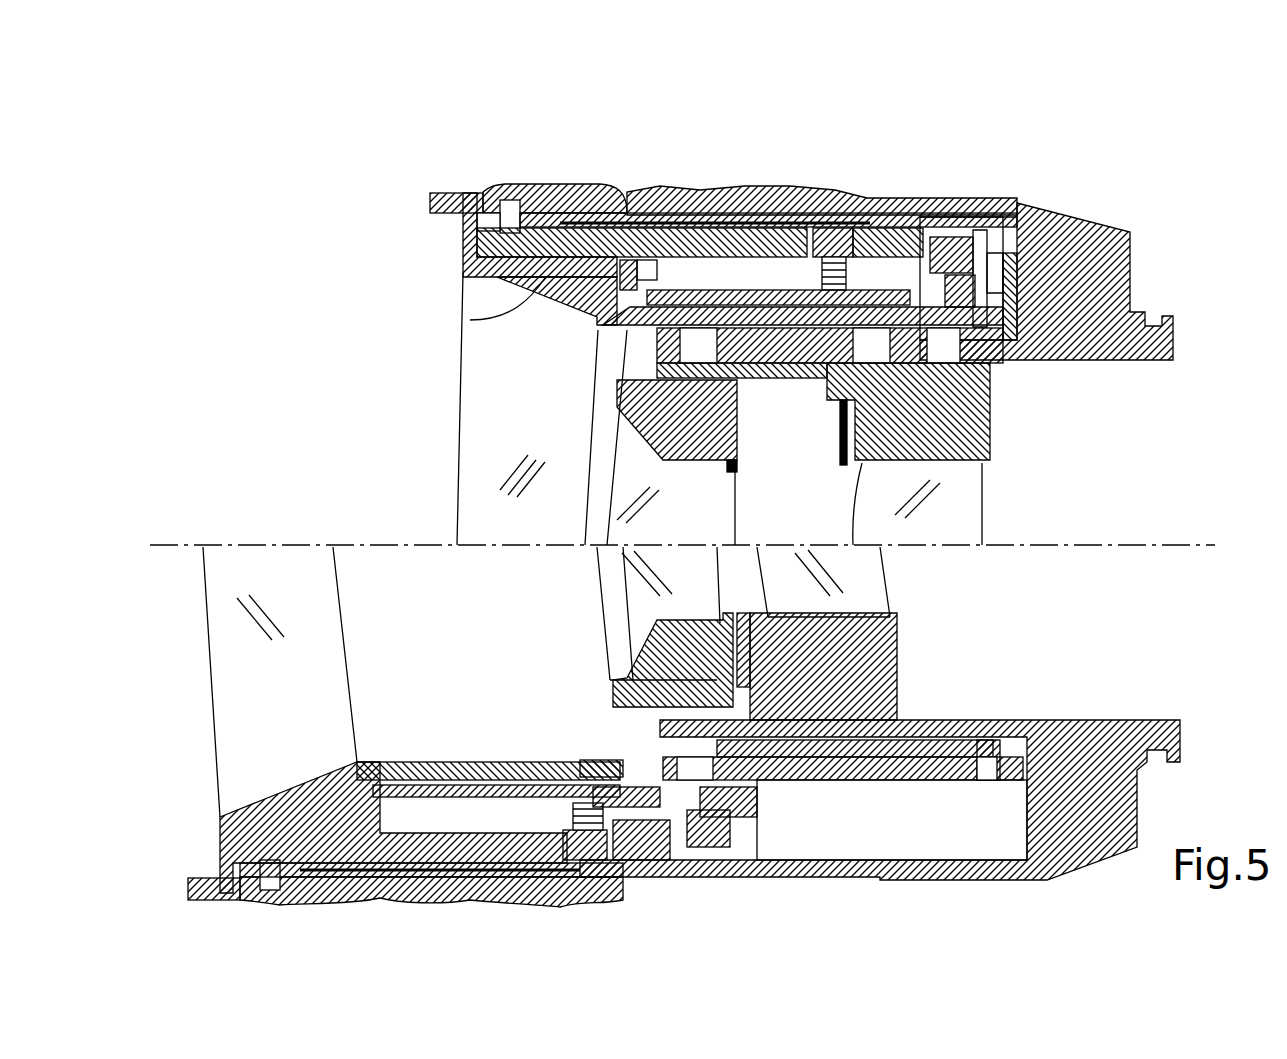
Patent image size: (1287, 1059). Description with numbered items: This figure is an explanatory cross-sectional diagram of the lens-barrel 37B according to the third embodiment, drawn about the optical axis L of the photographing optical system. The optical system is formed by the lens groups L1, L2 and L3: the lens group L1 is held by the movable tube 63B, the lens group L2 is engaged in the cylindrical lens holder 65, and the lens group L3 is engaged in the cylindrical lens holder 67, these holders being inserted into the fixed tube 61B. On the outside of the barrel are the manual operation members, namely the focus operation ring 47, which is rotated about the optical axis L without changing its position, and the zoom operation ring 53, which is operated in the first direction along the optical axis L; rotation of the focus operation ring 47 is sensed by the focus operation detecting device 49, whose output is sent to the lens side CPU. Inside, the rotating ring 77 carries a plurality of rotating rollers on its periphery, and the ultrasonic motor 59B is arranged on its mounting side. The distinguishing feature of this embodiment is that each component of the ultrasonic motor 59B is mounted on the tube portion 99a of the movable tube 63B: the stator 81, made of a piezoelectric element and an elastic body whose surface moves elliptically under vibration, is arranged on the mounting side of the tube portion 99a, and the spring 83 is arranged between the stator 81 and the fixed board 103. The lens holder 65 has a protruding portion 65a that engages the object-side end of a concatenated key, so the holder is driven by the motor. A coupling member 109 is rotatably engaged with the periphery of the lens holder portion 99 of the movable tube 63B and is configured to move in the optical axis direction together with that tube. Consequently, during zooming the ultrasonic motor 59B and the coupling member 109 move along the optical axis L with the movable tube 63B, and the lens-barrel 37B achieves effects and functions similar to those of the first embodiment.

The lens-barrel 37B is at (1132, 141).
The movable tube 63B is at (432, 190).
The focus operation ring 47 is at (530, 186).
The zoom operation ring 53 is at (706, 186).
The ultrasonic motor 59B is at (988, 233).
The rotating ring 77 is at (863, 233).
The stator 81 is at (940, 237).
The spring 83 is at (980, 257).
The fixed board 103 is at (1007, 255).
The rear barrel body 61B is at (1110, 262).
The lens holder portion 99 is at (463, 233).
The coupling member 109 is at (470, 321).
The focus operation detecting device 49 is at (633, 370).
The protruding portion 65a is at (590, 365).
The lens holder 65 is at (740, 445).
The tube portion 99a is at (813, 367).
The lens holder 67 is at (975, 428).
The lens group L1 is at (470, 500).
The lens group L2 is at (705, 521).
The lens group L3 is at (965, 510).
The optical axis L is at (694, 539).